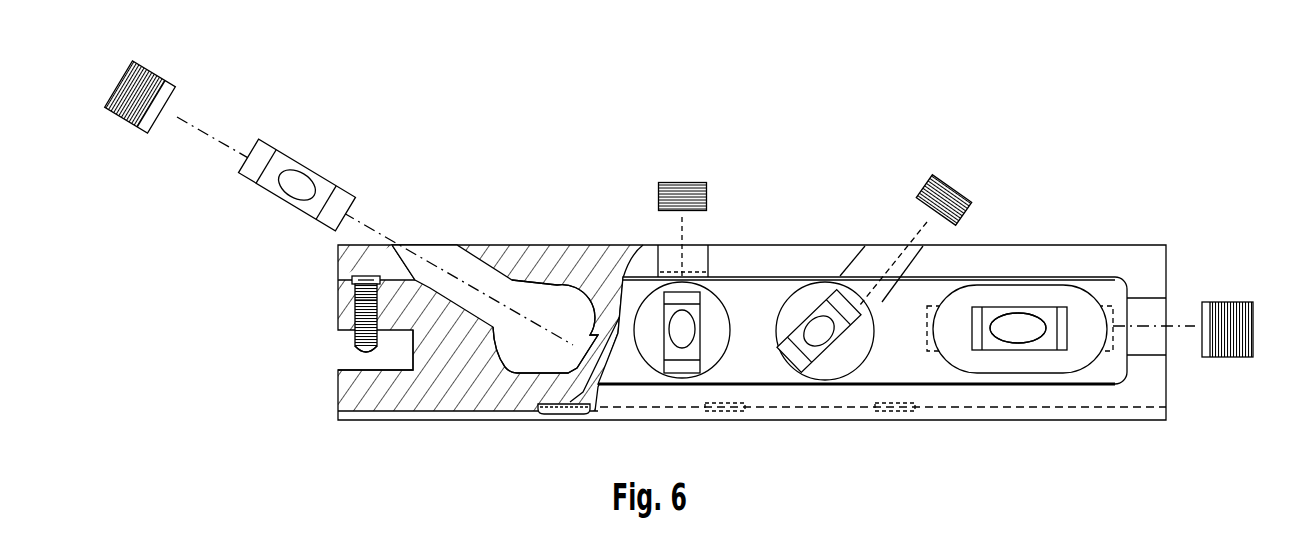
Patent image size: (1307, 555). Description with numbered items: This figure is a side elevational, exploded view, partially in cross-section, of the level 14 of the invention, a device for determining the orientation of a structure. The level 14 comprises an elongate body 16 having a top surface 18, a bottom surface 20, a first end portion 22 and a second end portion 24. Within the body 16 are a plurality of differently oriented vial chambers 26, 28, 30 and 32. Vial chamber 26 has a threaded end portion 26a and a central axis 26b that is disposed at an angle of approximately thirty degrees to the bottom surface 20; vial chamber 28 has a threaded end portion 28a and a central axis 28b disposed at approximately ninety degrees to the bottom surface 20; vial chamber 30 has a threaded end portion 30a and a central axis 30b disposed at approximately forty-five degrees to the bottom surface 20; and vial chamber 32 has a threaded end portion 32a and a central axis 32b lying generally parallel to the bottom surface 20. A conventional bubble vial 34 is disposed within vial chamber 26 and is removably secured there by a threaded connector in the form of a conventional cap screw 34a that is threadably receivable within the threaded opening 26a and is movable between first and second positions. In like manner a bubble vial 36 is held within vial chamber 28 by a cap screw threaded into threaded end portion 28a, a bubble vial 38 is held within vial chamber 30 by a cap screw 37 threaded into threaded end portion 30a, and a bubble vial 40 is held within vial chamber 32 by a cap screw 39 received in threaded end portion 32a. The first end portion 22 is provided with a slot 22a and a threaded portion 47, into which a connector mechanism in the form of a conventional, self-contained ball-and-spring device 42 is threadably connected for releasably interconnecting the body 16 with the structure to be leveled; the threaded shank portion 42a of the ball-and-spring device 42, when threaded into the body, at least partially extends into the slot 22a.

The level 14 is at (790, 190).
The elongate body 16 is at (1033, 255).
The top surface 18 is at (538, 245).
The bottom surface 20 is at (1092, 420).
The first end portion 22 is at (405, 432).
The slot 22a is at (343, 362).
The second end portion 24 is at (1132, 238).
The vial chamber 26 is at (417, 258).
The threaded end portion 26a is at (487, 268).
The central axis 26b is at (205, 132).
The vial chamber 28 is at (694, 293).
The threaded end portion 28a is at (666, 244).
The central axis 28b is at (686, 222).
The vial chamber 30 is at (847, 293).
The threaded end portion 30a is at (895, 303).
The central axis 30b is at (917, 232).
The vial chamber 32 is at (1107, 306).
The threaded end portion 32a is at (1152, 298).
The central axis 32b is at (1177, 327).
The bubble vial 34 is at (290, 157).
The cap screw 34a is at (148, 72).
The bubble vial 36 is at (672, 350).
The cap screw 37 is at (700, 180).
The bubble vial 38 is at (830, 350).
The cap screw 39 is at (1238, 298).
The bubble vial 40 is at (1003, 347).
The ball-and-spring device 42 is at (351, 300).
The threaded shank portion 42a is at (356, 341).
The threaded portion 47 is at (367, 302).